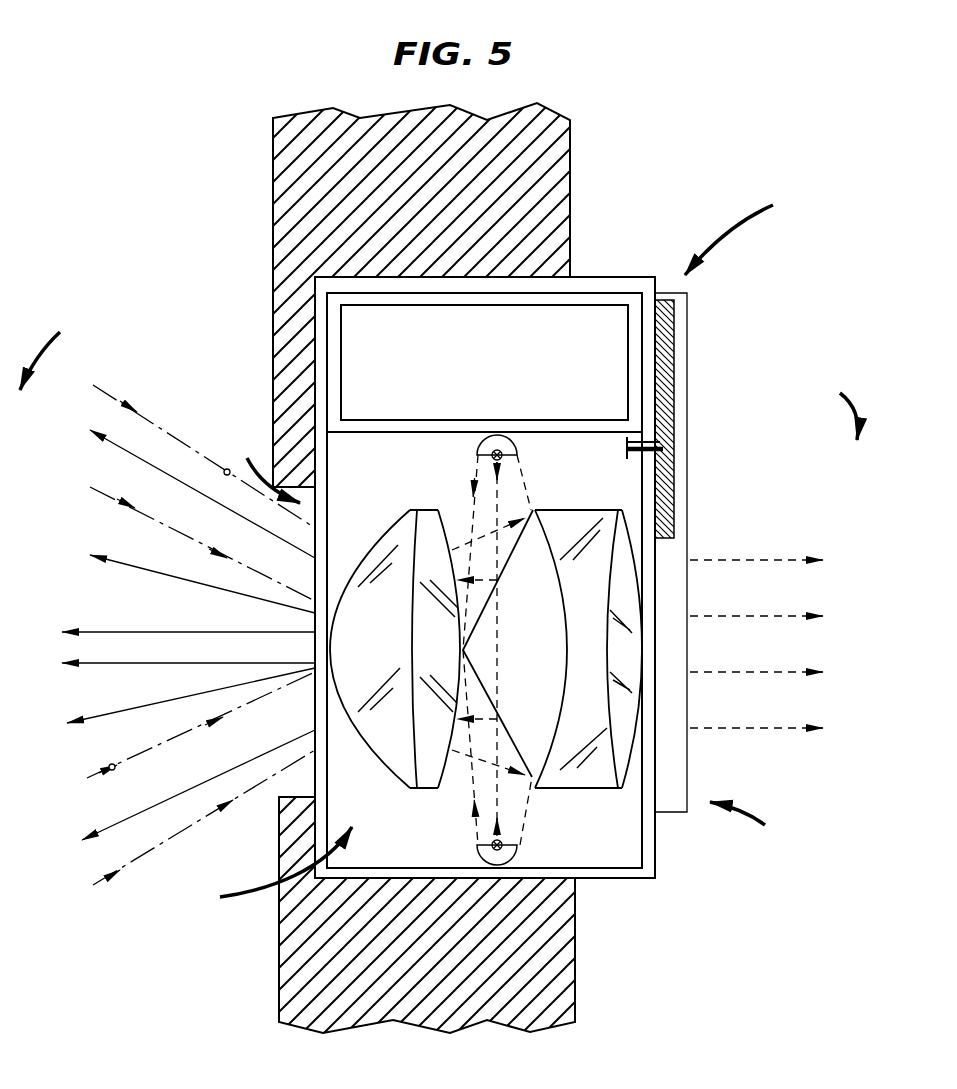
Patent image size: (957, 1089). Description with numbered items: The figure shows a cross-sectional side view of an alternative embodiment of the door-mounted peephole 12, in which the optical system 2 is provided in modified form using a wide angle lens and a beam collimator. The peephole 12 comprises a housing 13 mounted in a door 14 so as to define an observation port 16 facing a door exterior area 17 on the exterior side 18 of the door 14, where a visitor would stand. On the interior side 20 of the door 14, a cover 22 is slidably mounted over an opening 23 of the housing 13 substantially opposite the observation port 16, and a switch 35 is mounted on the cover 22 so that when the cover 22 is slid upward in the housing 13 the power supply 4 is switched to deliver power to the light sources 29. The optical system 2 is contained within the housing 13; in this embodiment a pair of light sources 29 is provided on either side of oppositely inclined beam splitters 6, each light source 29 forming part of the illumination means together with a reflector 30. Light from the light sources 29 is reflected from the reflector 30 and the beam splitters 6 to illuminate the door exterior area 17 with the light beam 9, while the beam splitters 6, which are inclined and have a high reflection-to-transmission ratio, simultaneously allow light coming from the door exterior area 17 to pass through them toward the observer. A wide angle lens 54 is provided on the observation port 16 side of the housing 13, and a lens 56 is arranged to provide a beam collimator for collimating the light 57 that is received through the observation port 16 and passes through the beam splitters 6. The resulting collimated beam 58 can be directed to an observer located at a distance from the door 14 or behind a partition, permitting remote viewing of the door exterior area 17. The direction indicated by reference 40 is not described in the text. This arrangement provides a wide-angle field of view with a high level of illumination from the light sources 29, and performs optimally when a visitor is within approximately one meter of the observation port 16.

The optical system 2 is at (271, 869).
The power supply 4 is at (628, 333).
The beam splitter 6 is at (520, 548).
The light beam 9 is at (142, 458).
The peephole 12 is at (744, 228).
The housing 13 is at (605, 277).
The door 14 is at (570, 195).
The observation port 16 is at (263, 465).
The door exterior area 17 is at (53, 349).
The exterior side 18 is at (273, 152).
The interior side 20 is at (570, 142).
The cover 22 is at (674, 370).
The opening 23 is at (750, 828).
The light source 29 is at (505, 457).
The reflector 30 is at (497, 453).
The switch 35 is at (660, 440).
The viewing direction 40 is at (835, 405).
The wide angle lens 54 is at (363, 753).
The lens 56 is at (607, 523).
The light 57 is at (167, 527).
The collimated beam 58 is at (773, 560).